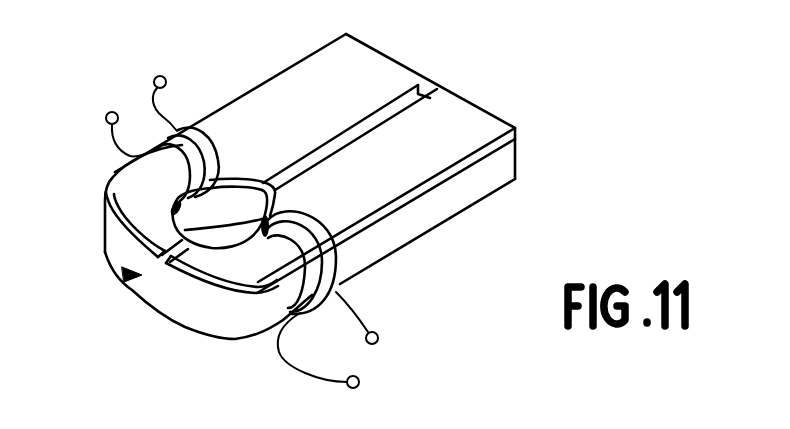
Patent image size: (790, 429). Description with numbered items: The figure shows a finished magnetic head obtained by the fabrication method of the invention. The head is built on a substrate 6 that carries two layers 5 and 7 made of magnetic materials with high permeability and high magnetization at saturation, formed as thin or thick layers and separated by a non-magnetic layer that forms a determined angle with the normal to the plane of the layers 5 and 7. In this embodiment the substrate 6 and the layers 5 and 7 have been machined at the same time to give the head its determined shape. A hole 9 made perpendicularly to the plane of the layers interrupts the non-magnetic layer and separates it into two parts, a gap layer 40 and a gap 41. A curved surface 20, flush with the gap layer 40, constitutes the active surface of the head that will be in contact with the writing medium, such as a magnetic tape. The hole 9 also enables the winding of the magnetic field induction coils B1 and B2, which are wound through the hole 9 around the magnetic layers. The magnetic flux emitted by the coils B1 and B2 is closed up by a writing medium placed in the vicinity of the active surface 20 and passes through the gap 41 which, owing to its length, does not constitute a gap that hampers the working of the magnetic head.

The magnetic layer 5 is at (123, 234).
The substrate 6 is at (424, 213).
The magnetic layer 7 is at (240, 290).
The hole 9 is at (244, 217).
The curved surface 20 is at (118, 277).
The gap layer part 40 is at (163, 280).
The gap 41 is at (420, 88).
The coil B1 is at (130, 152).
The coil B2 is at (337, 293).